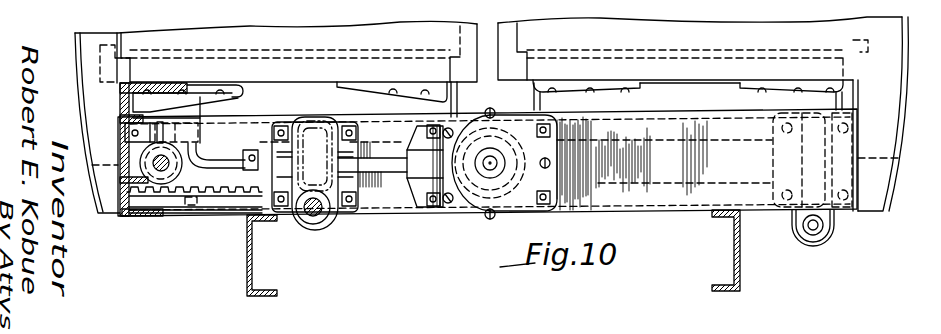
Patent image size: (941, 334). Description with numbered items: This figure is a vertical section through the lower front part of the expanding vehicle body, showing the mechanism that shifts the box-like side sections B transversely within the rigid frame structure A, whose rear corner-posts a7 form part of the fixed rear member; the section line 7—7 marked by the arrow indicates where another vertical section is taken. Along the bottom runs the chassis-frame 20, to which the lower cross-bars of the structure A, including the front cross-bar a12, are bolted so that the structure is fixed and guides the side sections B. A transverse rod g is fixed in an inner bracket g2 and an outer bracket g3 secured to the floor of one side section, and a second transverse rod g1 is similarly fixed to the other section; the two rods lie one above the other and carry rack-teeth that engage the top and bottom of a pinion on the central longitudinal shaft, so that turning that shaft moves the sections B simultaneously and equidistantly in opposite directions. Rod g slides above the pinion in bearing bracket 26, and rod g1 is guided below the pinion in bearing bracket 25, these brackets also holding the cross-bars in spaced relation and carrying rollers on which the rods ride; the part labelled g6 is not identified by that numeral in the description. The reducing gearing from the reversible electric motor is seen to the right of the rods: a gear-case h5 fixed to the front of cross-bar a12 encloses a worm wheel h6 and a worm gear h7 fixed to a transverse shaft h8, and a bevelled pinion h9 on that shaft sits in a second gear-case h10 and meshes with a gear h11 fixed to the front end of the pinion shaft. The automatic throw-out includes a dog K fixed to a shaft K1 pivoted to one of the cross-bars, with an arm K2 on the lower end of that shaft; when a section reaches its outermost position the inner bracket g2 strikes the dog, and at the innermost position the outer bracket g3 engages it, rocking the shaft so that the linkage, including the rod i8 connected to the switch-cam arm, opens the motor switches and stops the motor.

The rear corner-posts a7 is at (50, 0).
The section line 7— 7 is at (57, 15).
The side sections B is at (78, 67).
The frame structure A is at (484, 41).
The outer bracket g3 is at (118, 97).
The inner bracket g2 is at (370, 93).
The front cross-bar a12 is at (696, 120).
The pinion g6 is at (163, 184).
The transverse rod g1 is at (217, 197).
The bracket 26 is at (162, 218).
The shaft K1 is at (164, 123).
The dog K is at (192, 135).
The arm K2 is at (219, 155).
The transverse rod g is at (222, 150).
The rod i8 is at (255, 155).
The gear-case h5 is at (331, 229).
The worm wheel h6 is at (336, 224).
The worm gear h7 is at (392, 116).
The transverse shaft h8 is at (393, 168).
The bevelled pinion h9 is at (477, 197).
The gear-case h10 is at (500, 186).
The gear h11 is at (508, 195).
The bracket 25 is at (802, 162).
The chassis-frame 20 is at (247, 255).